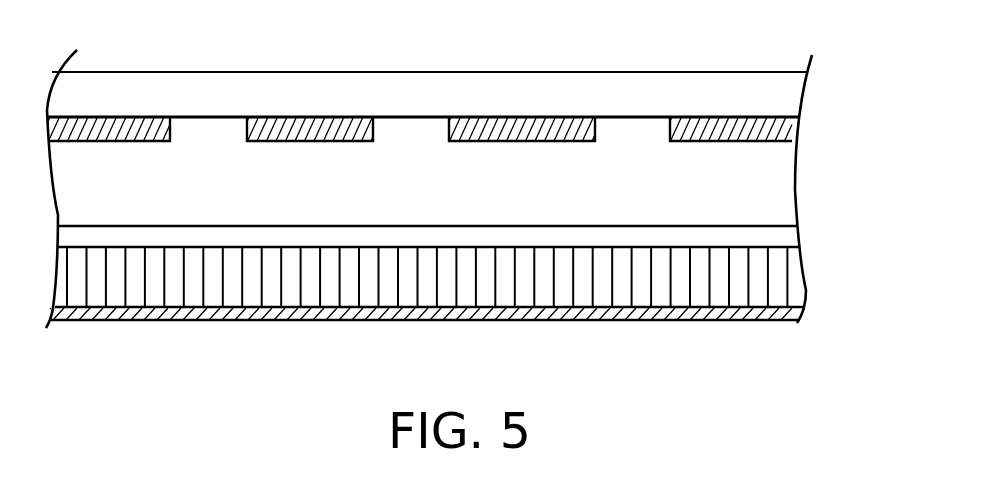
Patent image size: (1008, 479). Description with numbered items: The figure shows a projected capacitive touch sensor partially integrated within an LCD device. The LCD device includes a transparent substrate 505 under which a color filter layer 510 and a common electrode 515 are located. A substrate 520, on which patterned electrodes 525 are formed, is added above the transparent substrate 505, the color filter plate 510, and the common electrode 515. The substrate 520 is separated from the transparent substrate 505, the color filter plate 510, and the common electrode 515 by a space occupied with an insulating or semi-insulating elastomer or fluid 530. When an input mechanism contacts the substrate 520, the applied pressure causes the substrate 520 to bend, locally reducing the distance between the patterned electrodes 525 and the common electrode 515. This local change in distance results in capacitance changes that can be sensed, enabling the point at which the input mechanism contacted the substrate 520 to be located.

The transparent substrate 505 is at (807, 240).
The color filter layer 510 is at (807, 295).
The common electrode 515 is at (798, 315).
The substrate 520 is at (785, 89).
The patterned electrodes 525 is at (155, 142).
The insulating elastomer or fluid 530 is at (408, 198).